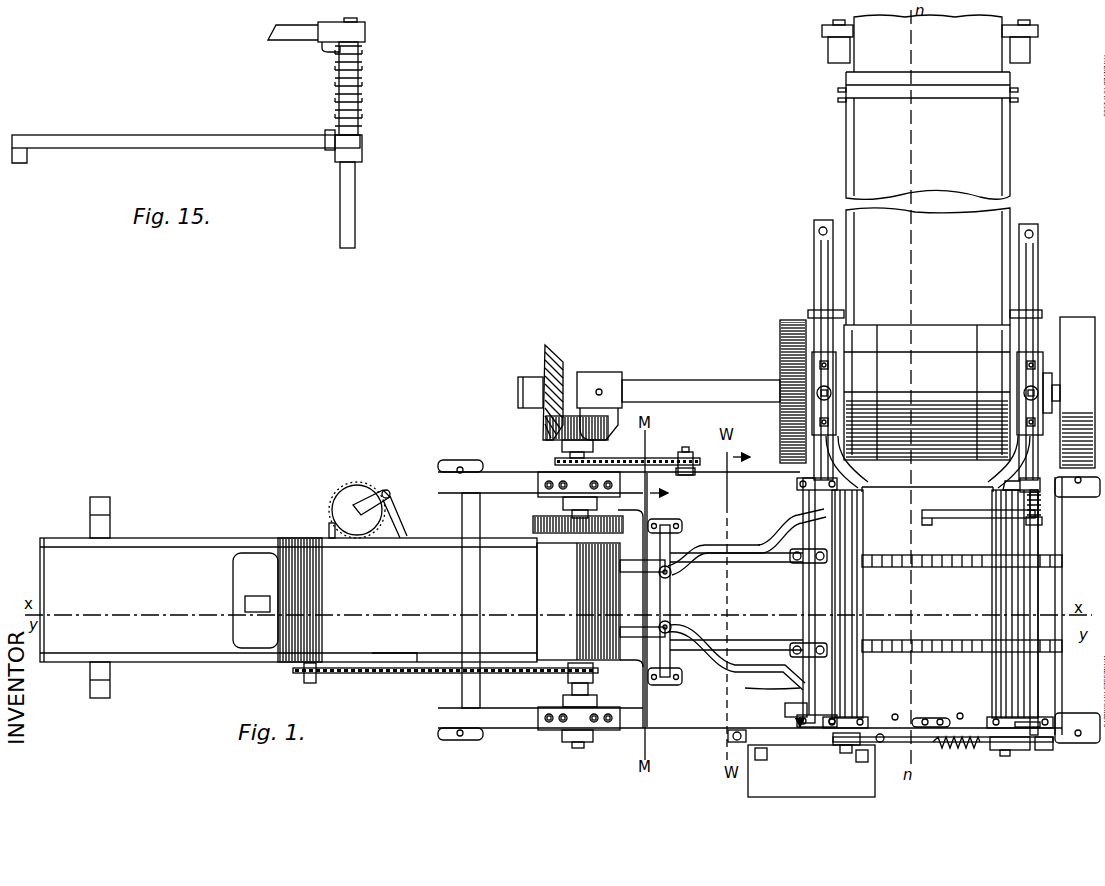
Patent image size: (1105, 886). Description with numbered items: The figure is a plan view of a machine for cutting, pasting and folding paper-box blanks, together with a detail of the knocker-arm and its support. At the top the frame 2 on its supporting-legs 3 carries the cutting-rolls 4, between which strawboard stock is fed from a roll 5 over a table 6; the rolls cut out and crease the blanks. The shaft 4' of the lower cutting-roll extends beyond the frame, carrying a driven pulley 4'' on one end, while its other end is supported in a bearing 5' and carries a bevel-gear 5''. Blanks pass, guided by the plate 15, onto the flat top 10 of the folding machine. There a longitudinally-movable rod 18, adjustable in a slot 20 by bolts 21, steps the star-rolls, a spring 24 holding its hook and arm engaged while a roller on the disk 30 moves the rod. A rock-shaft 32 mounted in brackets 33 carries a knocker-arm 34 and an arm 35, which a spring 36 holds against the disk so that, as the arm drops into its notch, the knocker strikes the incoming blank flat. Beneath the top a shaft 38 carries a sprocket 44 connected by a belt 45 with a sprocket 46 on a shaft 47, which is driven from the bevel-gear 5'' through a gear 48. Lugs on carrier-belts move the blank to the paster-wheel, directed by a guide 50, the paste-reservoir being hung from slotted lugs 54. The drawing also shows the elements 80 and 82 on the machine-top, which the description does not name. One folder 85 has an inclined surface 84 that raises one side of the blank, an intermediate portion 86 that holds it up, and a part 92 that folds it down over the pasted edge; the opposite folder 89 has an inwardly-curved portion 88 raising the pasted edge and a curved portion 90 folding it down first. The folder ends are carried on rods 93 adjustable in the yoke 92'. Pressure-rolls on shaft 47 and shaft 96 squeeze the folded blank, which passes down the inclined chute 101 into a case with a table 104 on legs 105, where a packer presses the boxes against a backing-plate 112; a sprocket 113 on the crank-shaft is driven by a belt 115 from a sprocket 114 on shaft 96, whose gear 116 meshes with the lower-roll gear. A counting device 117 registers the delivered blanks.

In FIG. 1, the frame 2 is at (927, 420).
In FIG. 1, the supporting-legs 3 is at (820, 288).
In FIG. 1, the cutting-rolls 4 is at (927, 392).
In FIG. 1, the shaft 4' is at (714, 391).
In FIG. 1, the driven pulley 4'' is at (1069, 376).
In FIG. 1, the roll 5 is at (930, 43).
In FIG. 1, the bearing 5' is at (599, 390).
In FIG. 1, the bevel-gear 5'' is at (540, 387).
In FIG. 1, the table 6 is at (928, 198).
In FIG. 1, the top or table 10 is at (961, 610).
In FIG. 1, the plate 15 is at (927, 480).
In FIG. 1, the longitudinally-movable rod 18 is at (912, 745).
In FIG. 1, the slot 20 is at (941, 719).
In FIG. 1, the bolts 21 is at (925, 718).
In FIG. 1, the spring 24 is at (960, 750).
In FIG. 1, the disk 30 is at (1044, 752).
In FIG. 15, the rock-shaft 32 is at (355, 200).
In FIG. 1, the rock-shaft 32 is at (1036, 670).
In FIG. 15, the brackets 33 is at (357, 32).
In FIG. 1, the brackets 33 is at (1040, 486).
In FIG. 15, the knocker-arm 34 is at (199, 146).
In FIG. 1, the knocker-arm 34 is at (978, 518).
In FIG. 1, the arm 35 is at (1020, 752).
In FIG. 15, the spring 36 is at (360, 112).
In FIG. 1, the spring 36 is at (1042, 508).
In FIG. 1, the shaft 38 is at (694, 474).
In FIG. 1, the sprocket 44 is at (680, 456).
In FIG. 1, the belt 45 is at (627, 448).
In FIG. 1, the sprocket 46 is at (603, 428).
In FIG. 1, the shaft 47 is at (568, 457).
In FIG. 1, the gear 48 is at (560, 438).
In FIG. 1, the guide 50 is at (811, 744).
In FIG. 1, the slotted lugs 54 is at (732, 742).
In FIG. 1, the rod 80 is at (750, 560).
In FIG. 1, the rod 82 is at (760, 650).
In FIG. 1, the inclined surface 84 is at (800, 512).
In FIG. 1, the folder 85 is at (822, 515).
In FIG. 1, the intermediate portion 86 is at (748, 548).
In FIG. 1, the inwardly-curved portion 88 is at (758, 685).
In FIG. 1, the folder 89 is at (772, 699).
In FIG. 1, the curved portion 90 is at (688, 642).
In FIG. 1, the part 92 is at (685, 599).
In FIG. 1, the yoke 92' is at (677, 602).
In FIG. 1, the rods 93 is at (601, 601).
In FIG. 1, the shaft 96 is at (576, 748).
In FIG. 1, the inclined chute 101 is at (449, 621).
In FIG. 1, the table or floor 104 is at (288, 600).
In FIG. 1, the legs 105 is at (110, 672).
In FIG. 1, the backing-plate 112 is at (270, 588).
In FIG. 1, the sprocket 113 is at (304, 680).
In FIG. 1, the sprocket 114 is at (594, 676).
In FIG. 1, the belt 115 is at (432, 677).
In FIG. 1, the gear 116 is at (536, 524).
In FIG. 1, the counting device 117 is at (358, 486).